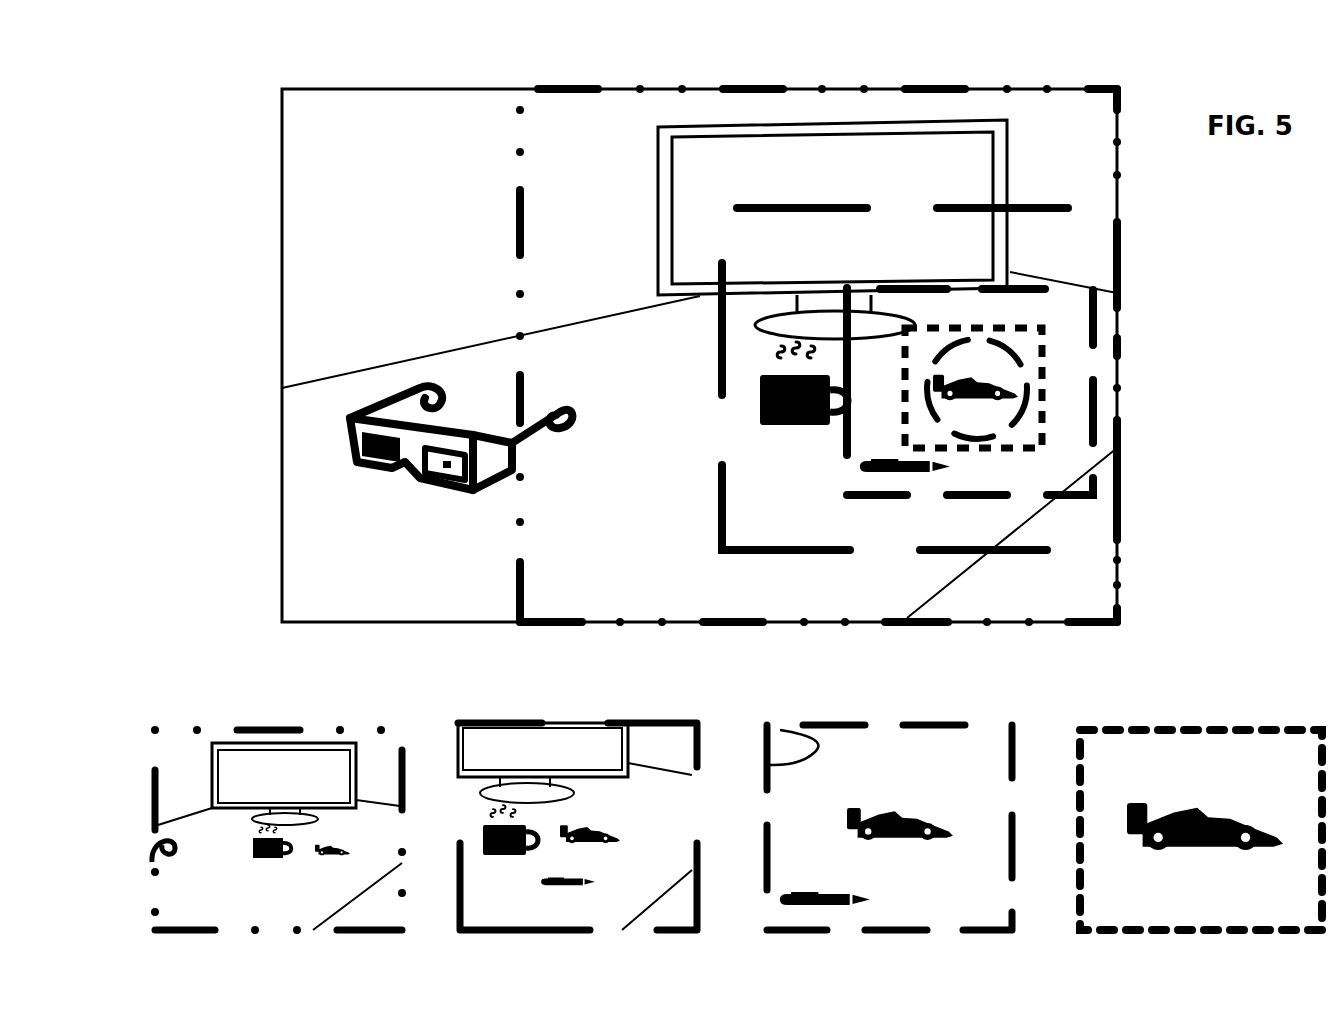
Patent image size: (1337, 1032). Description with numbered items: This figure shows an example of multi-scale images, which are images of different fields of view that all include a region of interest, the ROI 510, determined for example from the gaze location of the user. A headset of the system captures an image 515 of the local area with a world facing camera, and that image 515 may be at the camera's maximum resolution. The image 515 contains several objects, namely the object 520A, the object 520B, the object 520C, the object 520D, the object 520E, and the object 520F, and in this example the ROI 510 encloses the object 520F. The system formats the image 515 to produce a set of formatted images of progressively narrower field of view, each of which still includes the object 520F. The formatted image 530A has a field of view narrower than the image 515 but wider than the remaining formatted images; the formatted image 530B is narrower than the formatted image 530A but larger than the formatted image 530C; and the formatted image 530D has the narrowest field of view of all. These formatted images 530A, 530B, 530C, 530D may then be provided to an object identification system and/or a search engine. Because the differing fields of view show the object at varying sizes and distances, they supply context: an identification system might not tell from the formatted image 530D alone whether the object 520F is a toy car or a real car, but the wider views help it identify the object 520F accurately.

The image 515 is at (283, 200).
The ROI 510 is at (1042, 338).
The object 520A is at (300, 598).
The object 520B is at (348, 430).
The object 520C is at (760, 377).
The object 520D is at (703, 162).
The object 520E is at (950, 462).
The object 520F is at (965, 378).
The formatted image 530A is at (222, 730).
The formatted image 530B is at (510, 723).
The formatted image 530C is at (833, 722).
The formatted image 530D is at (1140, 732).